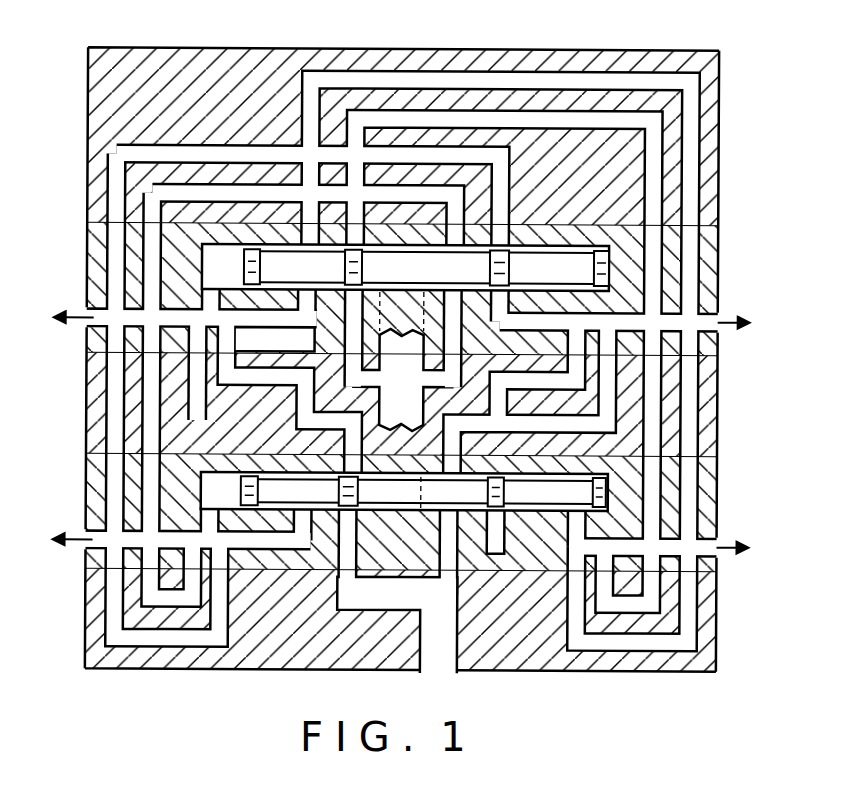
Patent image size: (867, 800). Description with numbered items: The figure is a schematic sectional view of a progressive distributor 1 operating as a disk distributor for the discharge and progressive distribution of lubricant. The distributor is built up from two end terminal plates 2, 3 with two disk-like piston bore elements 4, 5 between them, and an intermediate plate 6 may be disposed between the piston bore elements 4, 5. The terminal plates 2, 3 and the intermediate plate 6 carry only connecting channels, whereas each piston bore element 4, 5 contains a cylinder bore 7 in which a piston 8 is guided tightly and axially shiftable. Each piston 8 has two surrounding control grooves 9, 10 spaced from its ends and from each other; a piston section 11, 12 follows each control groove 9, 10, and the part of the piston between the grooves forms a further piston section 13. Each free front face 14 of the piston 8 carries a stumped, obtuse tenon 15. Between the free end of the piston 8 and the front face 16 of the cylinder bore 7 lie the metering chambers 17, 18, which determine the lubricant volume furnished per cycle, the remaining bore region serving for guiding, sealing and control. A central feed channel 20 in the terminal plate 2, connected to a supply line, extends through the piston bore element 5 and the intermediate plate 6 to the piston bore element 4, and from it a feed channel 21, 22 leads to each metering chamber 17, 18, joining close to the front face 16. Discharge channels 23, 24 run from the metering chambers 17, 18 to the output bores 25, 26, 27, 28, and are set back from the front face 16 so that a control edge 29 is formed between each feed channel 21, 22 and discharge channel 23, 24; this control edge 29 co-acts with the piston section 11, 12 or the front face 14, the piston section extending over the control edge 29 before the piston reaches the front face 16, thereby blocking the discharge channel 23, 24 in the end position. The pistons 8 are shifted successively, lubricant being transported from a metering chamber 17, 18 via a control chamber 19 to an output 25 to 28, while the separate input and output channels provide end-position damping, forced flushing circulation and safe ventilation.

The progressive distributor 1 is at (662, 44).
The end terminal plate 2 is at (285, 662).
The end terminal plate 3 is at (122, 52).
The piston bore element 4 is at (717, 288).
The piston bore element 5 is at (717, 516).
The intermediate plate 6 is at (717, 438).
The cylinder bore 7 is at (231, 246).
The piston 8 is at (556, 236).
The control groove 9 is at (347, 292).
The control groove 10 is at (498, 250).
The piston section 11 is at (284, 500).
The piston section 12 is at (529, 500).
The piston section 13 is at (436, 274).
The free front face 14 is at (604, 491).
The tenon 15 is at (250, 255).
The front face of the cylinder bore 16 is at (196, 256).
The metering chamber 17 is at (212, 250).
The metering chamber 18 is at (600, 248).
The control chamber 19 is at (496, 520).
The central feed channel 20 is at (405, 652).
The feed channel 21 is at (146, 378).
The feed channel 22 is at (603, 343).
The discharge channel 23 is at (226, 300).
The discharge channel 24 is at (575, 292).
The output bore 25 is at (171, 554).
The output bore 26 is at (181, 300).
The output bore 27 is at (718, 330).
The output bore 28 is at (716, 542).
The control edge 29 is at (203, 296).